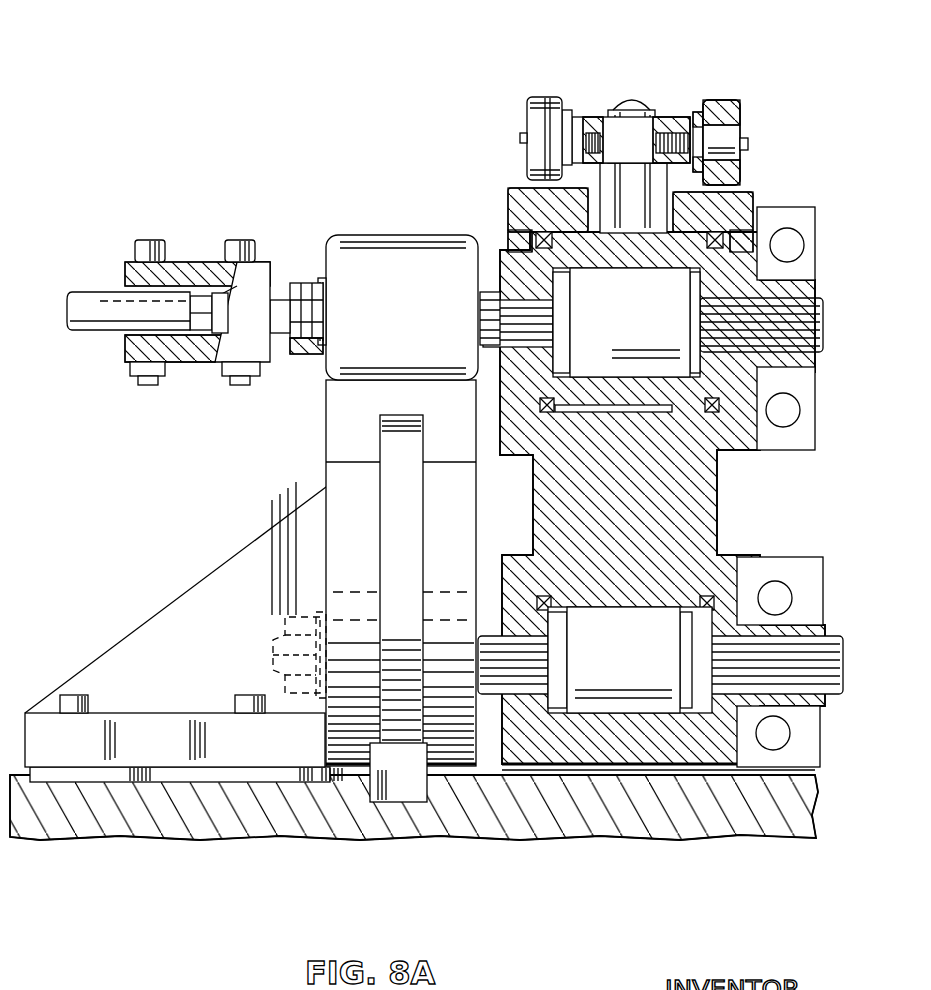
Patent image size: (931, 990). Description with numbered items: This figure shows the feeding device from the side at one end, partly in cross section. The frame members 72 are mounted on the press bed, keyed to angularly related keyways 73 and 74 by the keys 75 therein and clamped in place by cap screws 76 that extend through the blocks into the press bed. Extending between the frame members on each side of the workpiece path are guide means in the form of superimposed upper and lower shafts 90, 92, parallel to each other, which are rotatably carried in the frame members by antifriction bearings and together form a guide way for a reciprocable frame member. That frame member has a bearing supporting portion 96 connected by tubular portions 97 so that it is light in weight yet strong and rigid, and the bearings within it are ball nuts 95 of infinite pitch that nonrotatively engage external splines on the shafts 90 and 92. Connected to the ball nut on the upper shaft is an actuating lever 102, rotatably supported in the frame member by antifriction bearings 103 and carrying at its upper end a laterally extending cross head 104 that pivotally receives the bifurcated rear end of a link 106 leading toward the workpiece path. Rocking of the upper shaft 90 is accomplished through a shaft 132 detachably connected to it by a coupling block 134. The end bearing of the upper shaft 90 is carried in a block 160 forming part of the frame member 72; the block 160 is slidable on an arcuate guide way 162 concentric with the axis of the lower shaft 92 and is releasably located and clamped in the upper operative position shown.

The frame members 72 is at (210, 592).
The keyway 73 is at (222, 790).
The keyway 74 is at (410, 792).
The keys 75 is at (385, 770).
The cap screws 76 is at (238, 700).
The upper shaft 90 is at (282, 292).
The lower shaft 92 is at (830, 645).
The ball nuts 95 is at (642, 339).
The bearing supporting portion 96 is at (660, 745).
The tubular portions 97 is at (815, 230).
The actuating lever 102 is at (634, 200).
The antifriction bearings 103 is at (525, 245).
The cross head 104 is at (598, 118).
The link 106 is at (718, 108).
The shaft 132 is at (90, 300).
The coupling block 134 is at (195, 262).
The block 160 is at (397, 258).
The arcuate guide way 162 is at (393, 490).